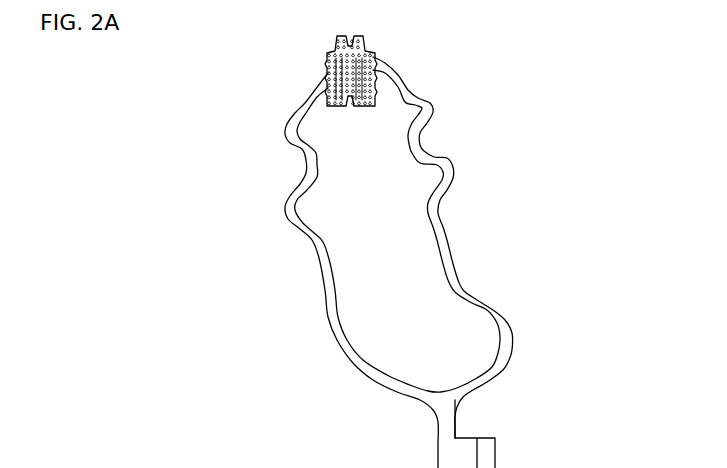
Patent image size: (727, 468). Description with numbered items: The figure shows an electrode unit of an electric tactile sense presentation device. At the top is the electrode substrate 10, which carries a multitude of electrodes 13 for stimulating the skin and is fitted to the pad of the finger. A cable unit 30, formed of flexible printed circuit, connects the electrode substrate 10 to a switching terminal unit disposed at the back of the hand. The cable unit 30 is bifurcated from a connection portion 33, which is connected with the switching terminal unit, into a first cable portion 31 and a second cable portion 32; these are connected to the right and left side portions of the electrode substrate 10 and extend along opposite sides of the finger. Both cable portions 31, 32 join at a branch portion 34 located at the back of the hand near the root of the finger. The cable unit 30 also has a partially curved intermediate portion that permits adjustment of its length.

The electrode substrate 10 is at (373, 51).
The electrodes 13 is at (328, 54).
The cable unit 30 is at (458, 280).
The first cable portion 31 is at (443, 218).
The second cable portion 32 is at (316, 254).
The connection portion 33 is at (457, 418).
The branch portion 34 is at (452, 397).